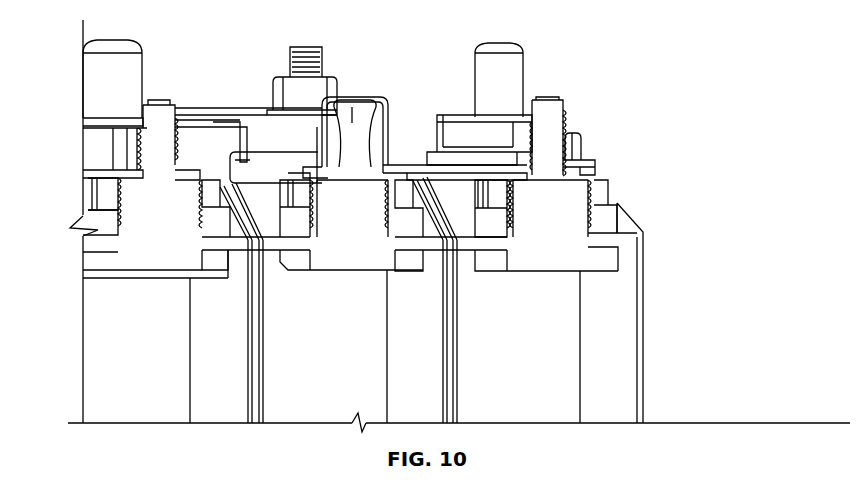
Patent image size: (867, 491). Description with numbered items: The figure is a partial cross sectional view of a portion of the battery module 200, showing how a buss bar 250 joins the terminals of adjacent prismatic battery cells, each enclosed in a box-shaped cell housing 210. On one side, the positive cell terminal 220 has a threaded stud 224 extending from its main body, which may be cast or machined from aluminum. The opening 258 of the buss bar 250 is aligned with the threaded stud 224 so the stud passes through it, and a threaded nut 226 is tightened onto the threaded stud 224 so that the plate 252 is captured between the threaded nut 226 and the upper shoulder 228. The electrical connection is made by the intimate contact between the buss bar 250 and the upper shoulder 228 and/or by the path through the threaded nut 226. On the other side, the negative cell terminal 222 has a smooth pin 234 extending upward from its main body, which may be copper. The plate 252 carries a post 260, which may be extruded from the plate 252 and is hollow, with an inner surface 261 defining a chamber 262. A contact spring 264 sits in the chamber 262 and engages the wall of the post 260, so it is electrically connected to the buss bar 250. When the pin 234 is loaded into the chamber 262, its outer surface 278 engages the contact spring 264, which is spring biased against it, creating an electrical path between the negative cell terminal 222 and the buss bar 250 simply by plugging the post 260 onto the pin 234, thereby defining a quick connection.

The battery module 200 is at (560, 43).
The cell housing 210 is at (646, 258).
The positive cell terminal 220 is at (528, 274).
The negative cell terminal 222 is at (336, 274).
The threaded stud 224 is at (566, 115).
The threaded nut 226 is at (575, 145).
The upper shoulder 228 is at (585, 163).
The smooth pin 234 is at (352, 123).
The buss bar 250 is at (425, 164).
The plate 252 is at (455, 172).
The opening 258 is at (527, 179).
The post 260 is at (388, 110).
The inner surface 261 is at (372, 158).
The chamber 262 is at (328, 180).
The contact spring 264 is at (324, 120).
The outer surface 278 is at (318, 156).